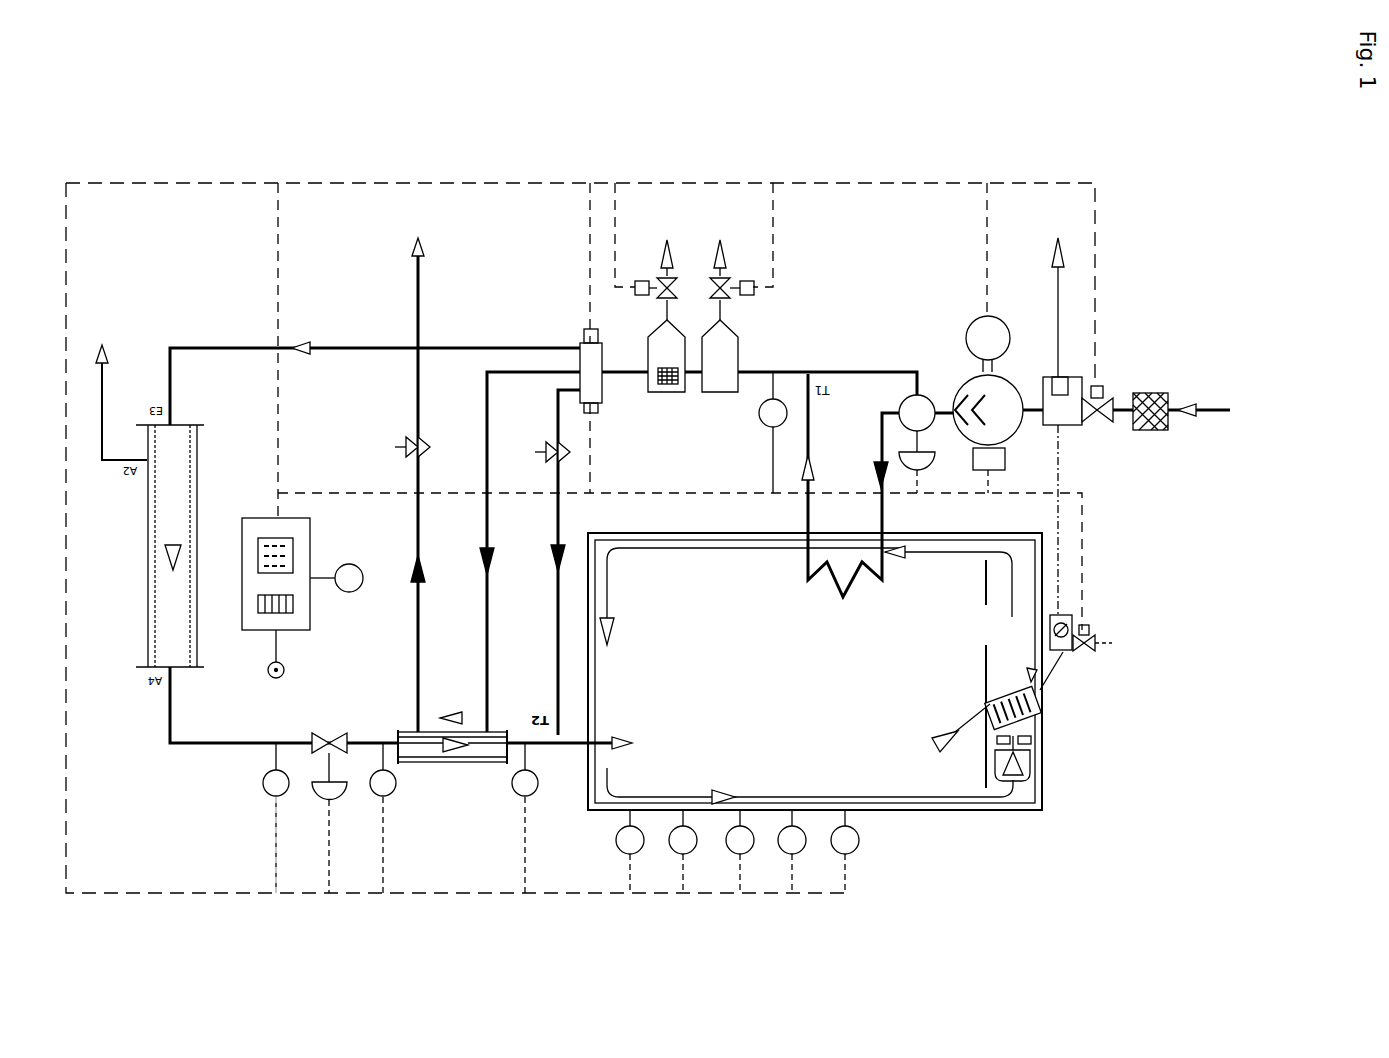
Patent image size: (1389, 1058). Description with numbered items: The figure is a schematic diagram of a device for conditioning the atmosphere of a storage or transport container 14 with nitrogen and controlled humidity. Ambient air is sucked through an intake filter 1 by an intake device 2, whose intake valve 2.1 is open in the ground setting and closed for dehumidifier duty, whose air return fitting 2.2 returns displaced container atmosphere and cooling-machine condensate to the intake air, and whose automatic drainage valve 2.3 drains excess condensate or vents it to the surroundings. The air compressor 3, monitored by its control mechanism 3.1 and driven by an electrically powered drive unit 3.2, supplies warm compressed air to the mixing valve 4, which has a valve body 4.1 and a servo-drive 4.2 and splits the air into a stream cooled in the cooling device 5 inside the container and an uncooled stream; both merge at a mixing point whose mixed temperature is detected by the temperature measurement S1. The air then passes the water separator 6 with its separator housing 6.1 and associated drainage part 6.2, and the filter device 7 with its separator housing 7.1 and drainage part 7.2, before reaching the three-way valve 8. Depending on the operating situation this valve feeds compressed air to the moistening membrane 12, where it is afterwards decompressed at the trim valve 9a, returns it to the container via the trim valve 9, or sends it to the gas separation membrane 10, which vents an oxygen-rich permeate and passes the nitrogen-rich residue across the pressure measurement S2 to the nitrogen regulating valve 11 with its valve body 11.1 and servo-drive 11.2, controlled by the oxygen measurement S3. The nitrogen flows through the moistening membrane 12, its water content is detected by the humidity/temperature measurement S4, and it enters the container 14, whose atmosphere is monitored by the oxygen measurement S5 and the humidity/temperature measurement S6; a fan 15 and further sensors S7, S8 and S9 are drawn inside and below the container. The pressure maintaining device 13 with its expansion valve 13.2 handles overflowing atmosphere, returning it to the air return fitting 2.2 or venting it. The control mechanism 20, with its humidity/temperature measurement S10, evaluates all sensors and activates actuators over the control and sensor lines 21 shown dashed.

The intake filter 1 is at (1150, 400).
The intake device 2 is at (1062, 388).
The intake valve 2.1 is at (1097, 414).
The air return fitting 2.2 is at (1048, 437).
The automatic drainage valve 2.3 is at (1043, 365).
The air compressor 3 is at (988, 410).
The control mechanism 3.1 is at (975, 470).
The drive unit 3.2 is at (976, 344).
The mixing valve 4 is at (915, 419).
The valve body 4.1 is at (908, 443).
The servo-drive 4.2 is at (897, 478).
The cooling device 5 is at (851, 495).
The water separator 6 is at (720, 330).
The separator housing 6.1 is at (711, 303).
The gas bottle valve actuator 6.2 is at (723, 288).
The filter device 7 is at (666, 330).
The separator housing 7.1 is at (657, 303).
The gas bottle valve actuator 7.2 is at (646, 278).
The 3-way valve 8 is at (591, 374).
The trim valve 9 is at (547, 452).
The trim valve for decompression 9a is at (402, 447).
The gas separating membrane 10 is at (157, 546).
The nitrogen valve 11 is at (324, 805).
The valve body 11.1 is at (329, 735).
The servo-drive 11.2 is at (333, 823).
The moistening membrane 12 is at (453, 752).
The pressure maintaining device 13 is at (1038, 691).
The expansion valve 13.2 is at (1092, 644).
The storage or transport container 14 is at (1055, 624).
The fan 15 is at (981, 731).
The controls 20 is at (276, 598).
The control and sensor lines 21 is at (580, 538).
The temperature measurement S1 is at (764, 432).
The pressure measurement S2 is at (266, 818).
The oxygen measurement S3 is at (386, 818).
The temperature/humidity measurement S4 is at (515, 818).
The oxygen measurement S5 is at (624, 851).
The temperature/humidity measurement S6 is at (677, 851).
The sensor S7 is at (733, 851).
The sensor S8 is at (785, 851).
The sensor S9 is at (839, 851).
The temperature/humidity measurement S10 is at (336, 588).